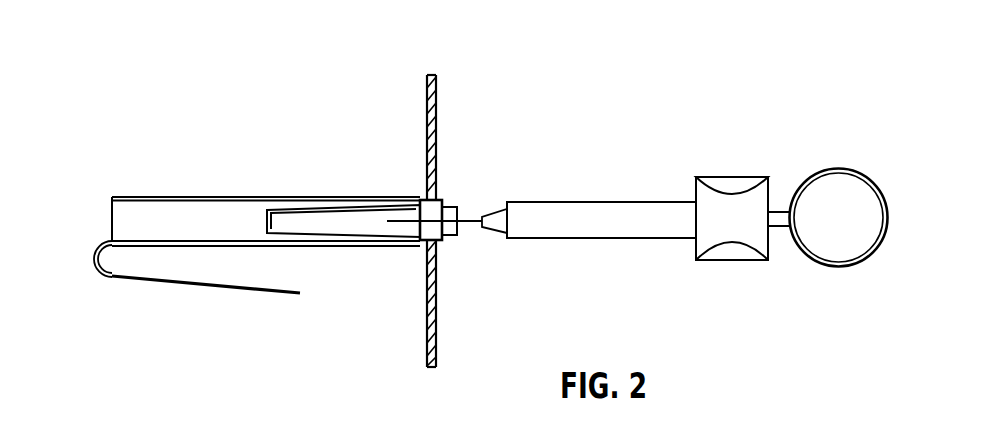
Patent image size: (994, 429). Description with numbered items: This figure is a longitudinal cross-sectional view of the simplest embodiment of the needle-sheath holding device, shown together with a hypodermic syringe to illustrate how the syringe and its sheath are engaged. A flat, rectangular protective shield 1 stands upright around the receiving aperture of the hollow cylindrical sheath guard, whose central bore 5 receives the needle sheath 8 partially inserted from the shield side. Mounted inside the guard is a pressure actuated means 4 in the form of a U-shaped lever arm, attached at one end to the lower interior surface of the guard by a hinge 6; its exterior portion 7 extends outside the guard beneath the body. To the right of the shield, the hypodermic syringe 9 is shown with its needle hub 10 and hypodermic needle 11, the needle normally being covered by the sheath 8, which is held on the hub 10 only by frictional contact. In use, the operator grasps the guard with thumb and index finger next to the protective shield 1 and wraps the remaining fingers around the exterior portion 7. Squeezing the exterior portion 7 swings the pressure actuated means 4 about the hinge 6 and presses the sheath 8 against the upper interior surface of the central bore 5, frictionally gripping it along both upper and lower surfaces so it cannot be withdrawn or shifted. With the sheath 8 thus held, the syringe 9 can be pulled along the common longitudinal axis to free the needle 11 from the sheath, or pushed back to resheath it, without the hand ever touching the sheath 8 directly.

The protective shield 1 is at (431, 92).
The pressure actuated means 4 is at (122, 278).
The central bore 5 is at (142, 222).
The hinge 6 is at (415, 248).
The exterior portion 7 is at (220, 283).
The needle sheath 8 is at (440, 195).
The hypodermic syringe 9 is at (565, 193).
The needle hub 10 is at (492, 238).
The hypodermic needle 11 is at (437, 238).